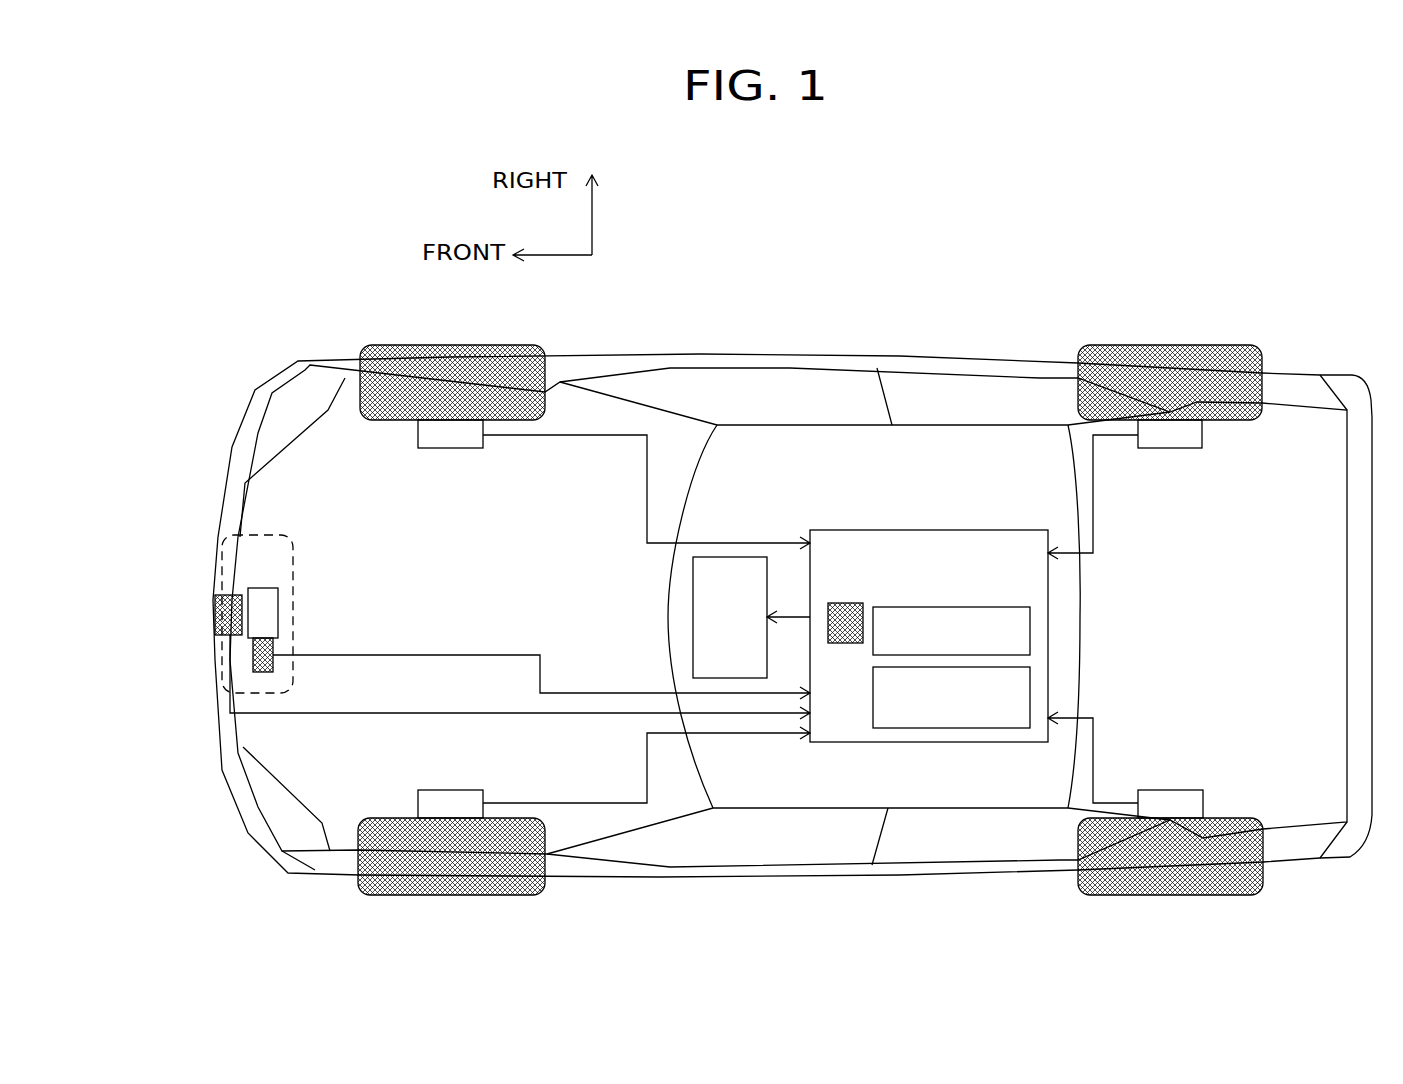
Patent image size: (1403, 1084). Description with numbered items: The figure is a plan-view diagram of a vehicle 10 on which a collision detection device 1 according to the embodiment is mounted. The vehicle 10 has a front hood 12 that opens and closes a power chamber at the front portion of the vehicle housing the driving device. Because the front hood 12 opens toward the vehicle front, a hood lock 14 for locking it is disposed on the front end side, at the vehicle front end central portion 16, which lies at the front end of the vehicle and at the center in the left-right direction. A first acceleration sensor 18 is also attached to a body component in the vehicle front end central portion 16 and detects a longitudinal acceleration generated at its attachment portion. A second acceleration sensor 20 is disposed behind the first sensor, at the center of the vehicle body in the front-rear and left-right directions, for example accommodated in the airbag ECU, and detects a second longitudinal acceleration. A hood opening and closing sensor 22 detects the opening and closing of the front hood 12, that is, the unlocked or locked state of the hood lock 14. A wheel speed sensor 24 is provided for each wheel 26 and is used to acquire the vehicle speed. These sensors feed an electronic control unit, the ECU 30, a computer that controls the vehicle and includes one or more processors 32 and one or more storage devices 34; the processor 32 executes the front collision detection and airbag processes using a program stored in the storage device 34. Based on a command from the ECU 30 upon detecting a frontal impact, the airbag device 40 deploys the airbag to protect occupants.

The collision detection device 1 is at (960, 463).
The vehicle 10 is at (780, 352).
The front hood 12 is at (325, 497).
The hood lock 14 is at (258, 588).
The vehicle front end central portion 16 is at (240, 714).
The first acceleration sensor 18 is at (216, 607).
The second acceleration sensor 20 is at (845, 643).
The hood opening and closing sensor 22 is at (255, 672).
The wheel speed sensor 24 is at (428, 448).
The wheel 26 is at (420, 345).
The electronic control unit (ECU) 30 is at (1022, 530).
The processor 32 is at (1030, 627).
The storage device 34 is at (1030, 691).
The airbag device 40 is at (693, 590).